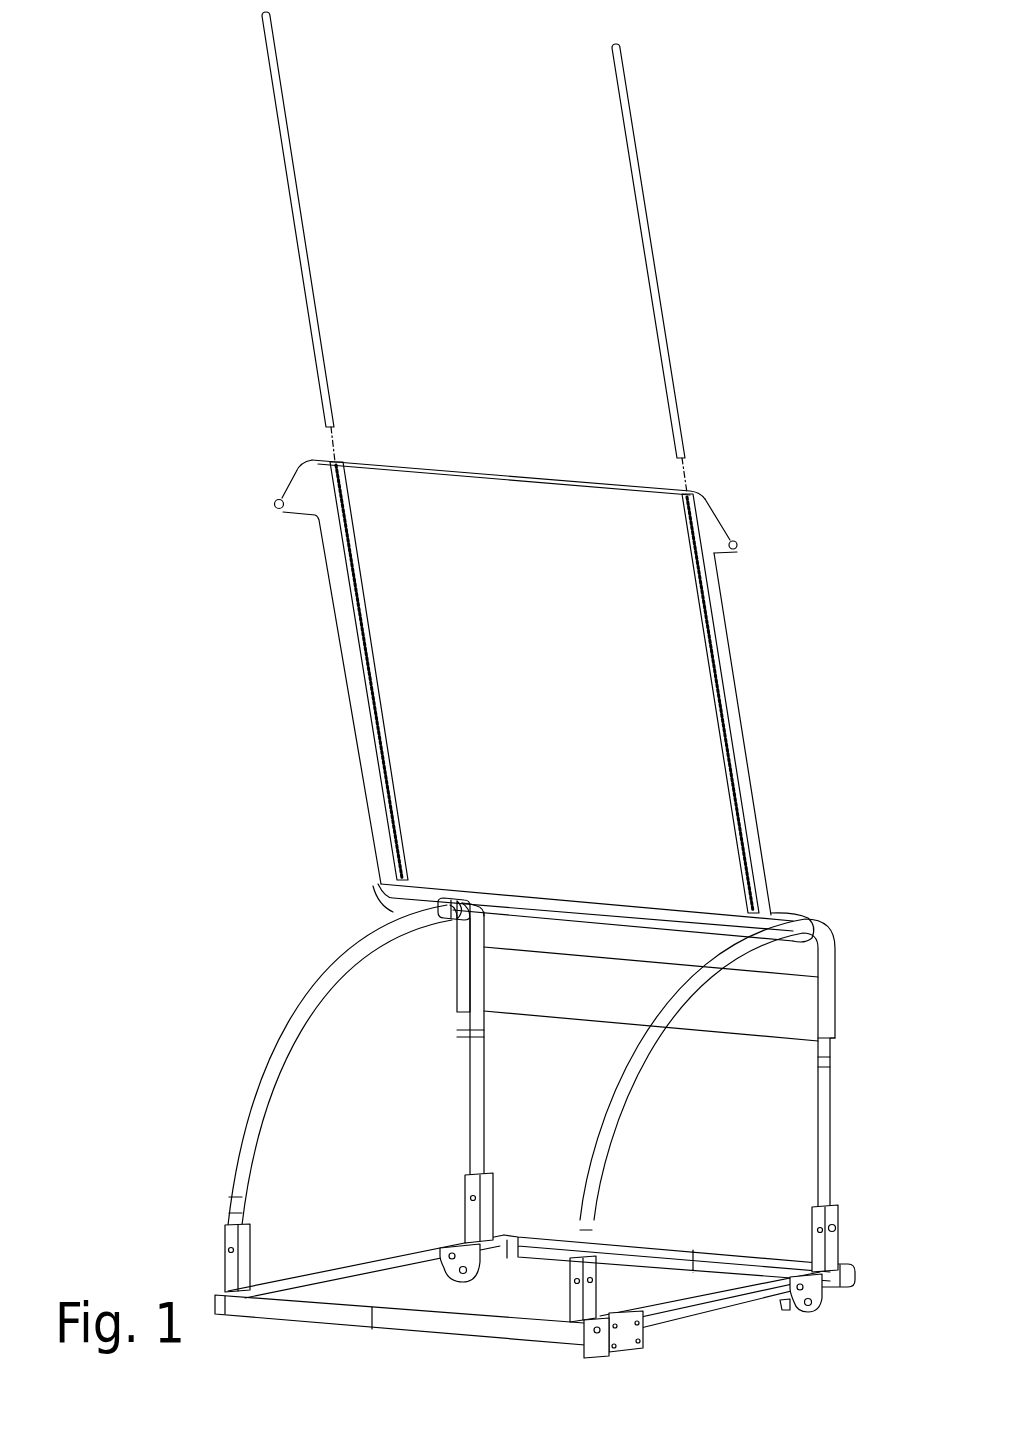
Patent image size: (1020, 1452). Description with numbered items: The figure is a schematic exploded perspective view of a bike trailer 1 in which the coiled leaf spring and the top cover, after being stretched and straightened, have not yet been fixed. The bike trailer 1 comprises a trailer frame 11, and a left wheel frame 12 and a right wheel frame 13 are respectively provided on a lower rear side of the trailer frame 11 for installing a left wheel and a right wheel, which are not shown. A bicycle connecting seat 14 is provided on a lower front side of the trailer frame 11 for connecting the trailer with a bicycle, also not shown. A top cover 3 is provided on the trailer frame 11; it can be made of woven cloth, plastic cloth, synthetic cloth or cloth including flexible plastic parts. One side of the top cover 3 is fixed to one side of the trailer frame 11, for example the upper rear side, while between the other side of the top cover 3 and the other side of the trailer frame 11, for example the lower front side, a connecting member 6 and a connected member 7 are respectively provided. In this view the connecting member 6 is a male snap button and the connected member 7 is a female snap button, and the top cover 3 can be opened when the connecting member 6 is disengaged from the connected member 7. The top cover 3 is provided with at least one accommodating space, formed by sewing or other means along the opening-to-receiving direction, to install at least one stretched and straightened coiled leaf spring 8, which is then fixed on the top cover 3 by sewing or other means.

The bike trailer 1 is at (535, 1314).
The top cover 3 is at (341, 693).
The connecting member 6 is at (278, 500).
The connected member 7 is at (597, 1338).
The coiled leaf spring 8 is at (297, 276).
The trailer frame 11 is at (445, 1332).
The left wheel frame 12 is at (445, 1240).
The right wheel frame 13 is at (820, 1286).
The bicycle connecting seat 14 is at (637, 1352).